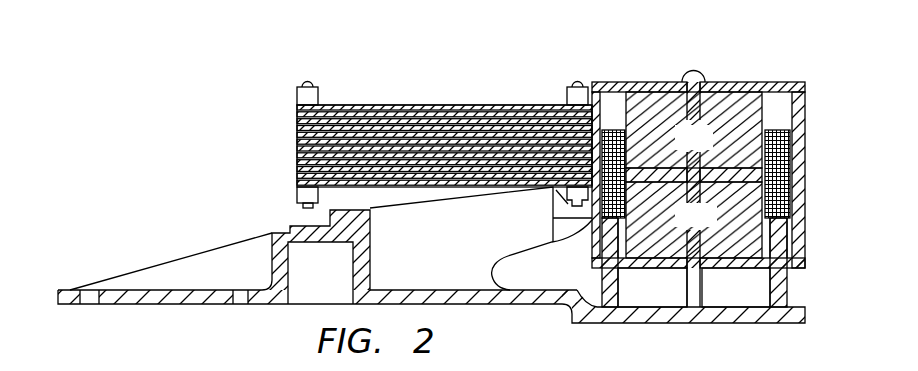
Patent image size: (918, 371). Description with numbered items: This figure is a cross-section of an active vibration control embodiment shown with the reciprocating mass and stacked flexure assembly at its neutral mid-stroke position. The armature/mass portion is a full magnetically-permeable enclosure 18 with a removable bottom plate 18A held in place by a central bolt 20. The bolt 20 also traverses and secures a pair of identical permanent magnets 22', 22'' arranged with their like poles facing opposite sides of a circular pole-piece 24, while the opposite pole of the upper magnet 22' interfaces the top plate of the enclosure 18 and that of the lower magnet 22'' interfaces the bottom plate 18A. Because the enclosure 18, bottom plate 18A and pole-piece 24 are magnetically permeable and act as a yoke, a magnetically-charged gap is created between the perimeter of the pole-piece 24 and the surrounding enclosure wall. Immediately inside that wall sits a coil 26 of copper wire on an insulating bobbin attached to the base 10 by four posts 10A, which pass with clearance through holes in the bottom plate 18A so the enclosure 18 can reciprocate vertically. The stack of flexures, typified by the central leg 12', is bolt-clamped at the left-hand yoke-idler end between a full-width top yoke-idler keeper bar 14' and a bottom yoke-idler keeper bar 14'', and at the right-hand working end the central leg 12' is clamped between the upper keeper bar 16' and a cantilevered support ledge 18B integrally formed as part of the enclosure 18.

The base 10 is at (437, 262).
The posts 10A is at (618, 282).
The central leg 12' is at (444, 125).
The top yoke-idler keeper bar 14' is at (279, 90).
The bottom yoke-idler keeper bar 14'' is at (276, 200).
The upper keeper bar 16' is at (550, 135).
The magnetically-permeable enclosure 18 is at (743, 92).
The bottom plate 18A is at (678, 263).
The cantilevered support ledge 18B is at (570, 195).
The central bolt 20 is at (693, 72).
The upper permanent magnet 22' is at (694, 130).
The lower permanent magnet 22'' is at (694, 220).
The circular pole-piece 24 is at (652, 173).
The coil 26 is at (620, 130).